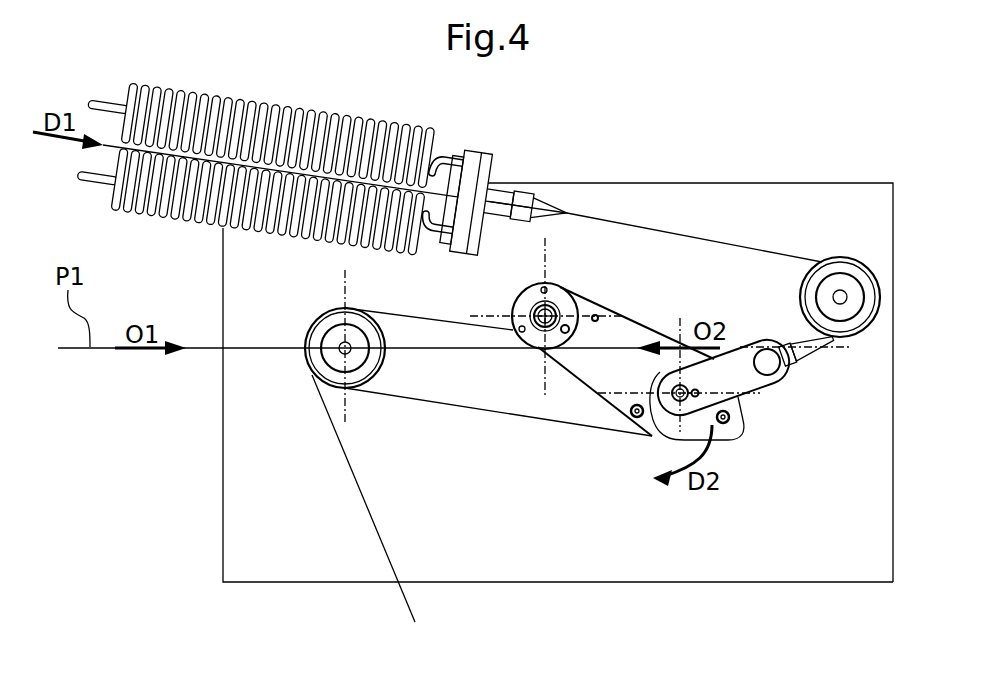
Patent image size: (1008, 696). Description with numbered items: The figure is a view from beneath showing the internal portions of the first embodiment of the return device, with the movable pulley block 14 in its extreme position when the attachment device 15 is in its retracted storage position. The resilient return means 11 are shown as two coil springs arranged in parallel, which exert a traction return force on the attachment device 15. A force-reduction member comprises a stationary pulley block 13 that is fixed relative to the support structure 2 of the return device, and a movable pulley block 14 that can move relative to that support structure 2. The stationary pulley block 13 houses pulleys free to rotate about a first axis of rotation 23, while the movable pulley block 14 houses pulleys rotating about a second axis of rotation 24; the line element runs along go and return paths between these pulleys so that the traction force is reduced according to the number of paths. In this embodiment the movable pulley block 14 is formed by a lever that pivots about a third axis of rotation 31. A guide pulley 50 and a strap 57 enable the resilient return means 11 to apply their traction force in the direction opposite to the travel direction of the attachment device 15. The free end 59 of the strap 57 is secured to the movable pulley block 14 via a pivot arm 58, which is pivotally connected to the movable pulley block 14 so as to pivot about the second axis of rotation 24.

The support structure 2 is at (548, 550).
The resilient return means 11 is at (307, 78).
The stationary pulley block 13 is at (294, 409).
The movable pulley block 14 is at (724, 422).
The attachment device 15 is at (732, 196).
The first axis of rotation 23 is at (341, 344).
The second axis of rotation 24 is at (657, 415).
The third axis of rotation 31 is at (549, 305).
The guide pulley 50 is at (845, 275).
The strap 57 is at (752, 245).
The pivot arm 58 is at (757, 383).
The free end 59 is at (805, 357).